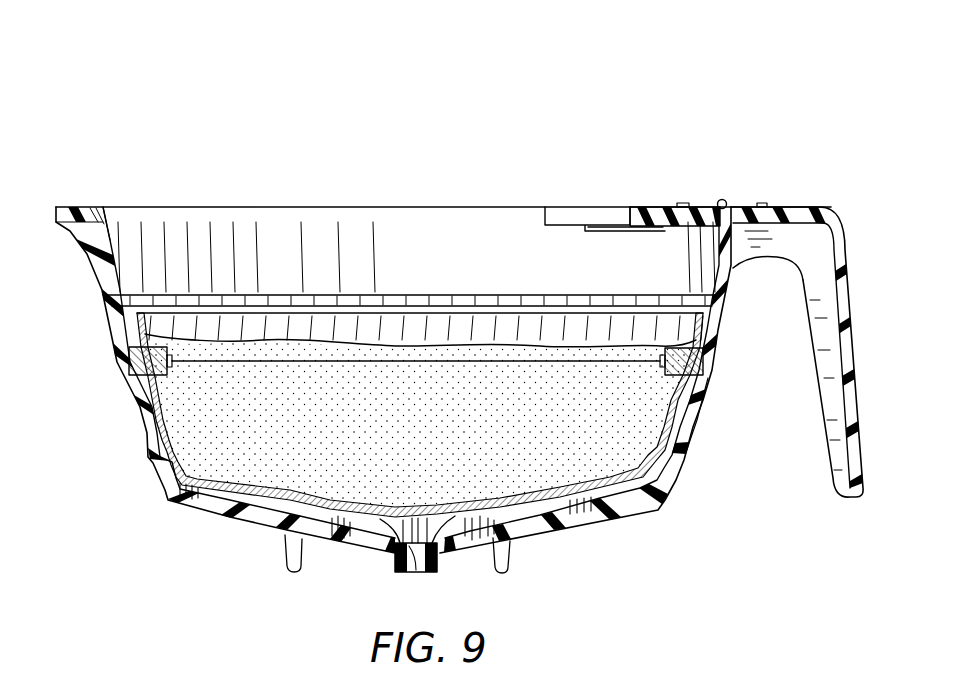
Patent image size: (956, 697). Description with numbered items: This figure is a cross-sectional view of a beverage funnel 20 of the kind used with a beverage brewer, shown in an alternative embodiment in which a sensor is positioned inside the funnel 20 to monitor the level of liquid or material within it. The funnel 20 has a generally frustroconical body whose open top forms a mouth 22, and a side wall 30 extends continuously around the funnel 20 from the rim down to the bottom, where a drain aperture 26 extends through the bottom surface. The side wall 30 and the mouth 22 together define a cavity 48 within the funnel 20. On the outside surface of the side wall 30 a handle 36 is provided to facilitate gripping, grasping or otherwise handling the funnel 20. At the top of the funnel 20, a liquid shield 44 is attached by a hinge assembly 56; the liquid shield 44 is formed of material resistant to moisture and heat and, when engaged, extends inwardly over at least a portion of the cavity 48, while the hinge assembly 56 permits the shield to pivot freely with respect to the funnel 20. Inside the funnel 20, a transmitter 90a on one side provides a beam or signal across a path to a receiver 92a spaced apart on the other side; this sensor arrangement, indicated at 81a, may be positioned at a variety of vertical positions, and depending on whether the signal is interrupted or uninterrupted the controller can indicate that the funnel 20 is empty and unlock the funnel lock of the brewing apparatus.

The beverage funnel 20 is at (152, 114).
The mouth 22 is at (398, 218).
The side wall 30 is at (110, 248).
The cavity 48 is at (356, 330).
The liquid shield 44 is at (607, 191).
The hinge assembly 56 is at (733, 170).
The handle 36 is at (845, 246).
The transmitter 90a is at (130, 362).
The receiver 92a is at (712, 370).
The side wall 81a is at (710, 397).
The drain aperture 26 is at (418, 566).